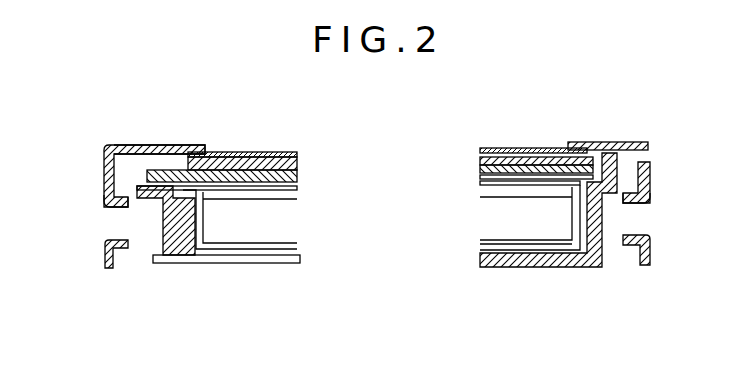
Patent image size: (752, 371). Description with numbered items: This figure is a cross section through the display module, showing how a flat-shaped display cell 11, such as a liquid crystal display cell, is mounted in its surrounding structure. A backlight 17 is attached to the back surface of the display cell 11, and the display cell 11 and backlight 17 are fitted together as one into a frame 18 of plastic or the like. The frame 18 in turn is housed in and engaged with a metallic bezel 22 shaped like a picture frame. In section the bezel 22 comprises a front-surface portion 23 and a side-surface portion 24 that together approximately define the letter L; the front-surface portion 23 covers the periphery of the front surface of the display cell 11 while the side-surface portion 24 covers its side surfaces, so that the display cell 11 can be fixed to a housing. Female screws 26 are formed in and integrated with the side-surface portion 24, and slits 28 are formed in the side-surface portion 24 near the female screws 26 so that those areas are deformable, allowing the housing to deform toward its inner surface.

The display cell 11 is at (273, 153).
The backlight 17 is at (265, 233).
The frame 18 is at (178, 253).
The bezel 22 is at (107, 148).
The front-surface portion 23 is at (153, 145).
The side-surface portion 24 is at (103, 190).
The female screws 26 is at (105, 242).
The slits 28 is at (640, 155).